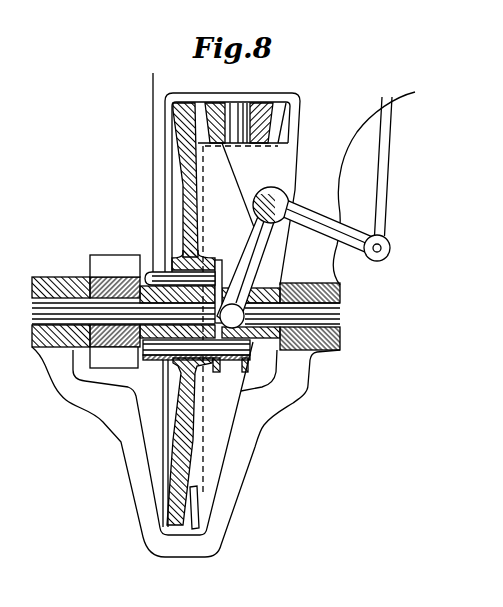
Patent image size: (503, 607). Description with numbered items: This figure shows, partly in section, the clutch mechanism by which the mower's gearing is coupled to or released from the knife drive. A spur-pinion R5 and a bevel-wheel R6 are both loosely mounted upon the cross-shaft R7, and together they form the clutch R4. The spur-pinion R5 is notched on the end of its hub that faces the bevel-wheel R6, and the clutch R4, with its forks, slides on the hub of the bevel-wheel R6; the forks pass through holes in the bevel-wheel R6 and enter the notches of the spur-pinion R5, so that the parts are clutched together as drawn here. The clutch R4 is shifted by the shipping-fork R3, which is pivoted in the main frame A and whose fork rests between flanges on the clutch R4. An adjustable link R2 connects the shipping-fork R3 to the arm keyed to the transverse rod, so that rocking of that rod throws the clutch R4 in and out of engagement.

The adjustable link R2 is at (383, 197).
The shipping-fork R3 is at (256, 271).
The clutch R4 is at (227, 362).
The spur-pinion R5 is at (120, 273).
The bevel-wheel R6 is at (197, 498).
The cross-shaft R7 is at (340, 310).
The main frame A is at (370, 188).